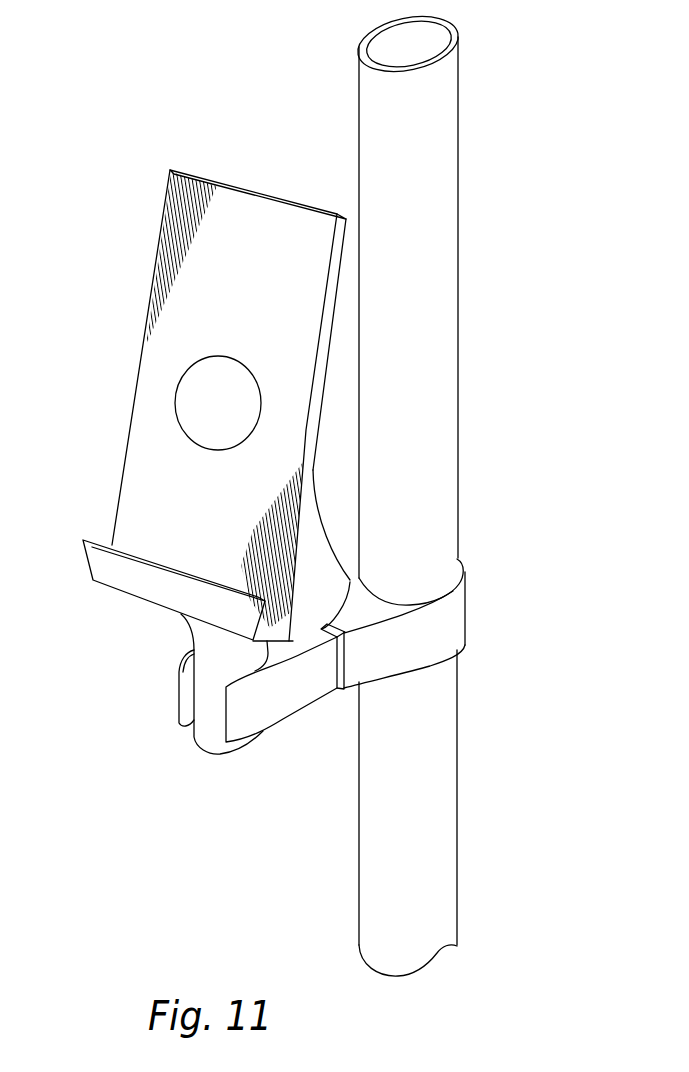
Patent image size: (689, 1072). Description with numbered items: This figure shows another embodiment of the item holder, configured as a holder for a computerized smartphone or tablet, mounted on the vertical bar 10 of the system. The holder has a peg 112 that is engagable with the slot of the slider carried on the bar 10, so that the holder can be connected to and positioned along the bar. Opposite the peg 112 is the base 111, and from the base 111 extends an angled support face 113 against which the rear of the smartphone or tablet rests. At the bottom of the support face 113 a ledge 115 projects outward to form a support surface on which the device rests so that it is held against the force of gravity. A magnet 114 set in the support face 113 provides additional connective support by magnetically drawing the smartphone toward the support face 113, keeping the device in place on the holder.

The vertical bar 10 is at (443, 335).
The base 111 is at (338, 568).
The peg 112 is at (203, 732).
The angled support face 113 is at (237, 213).
The magnet 114 is at (187, 402).
The ledge 115 is at (130, 553).